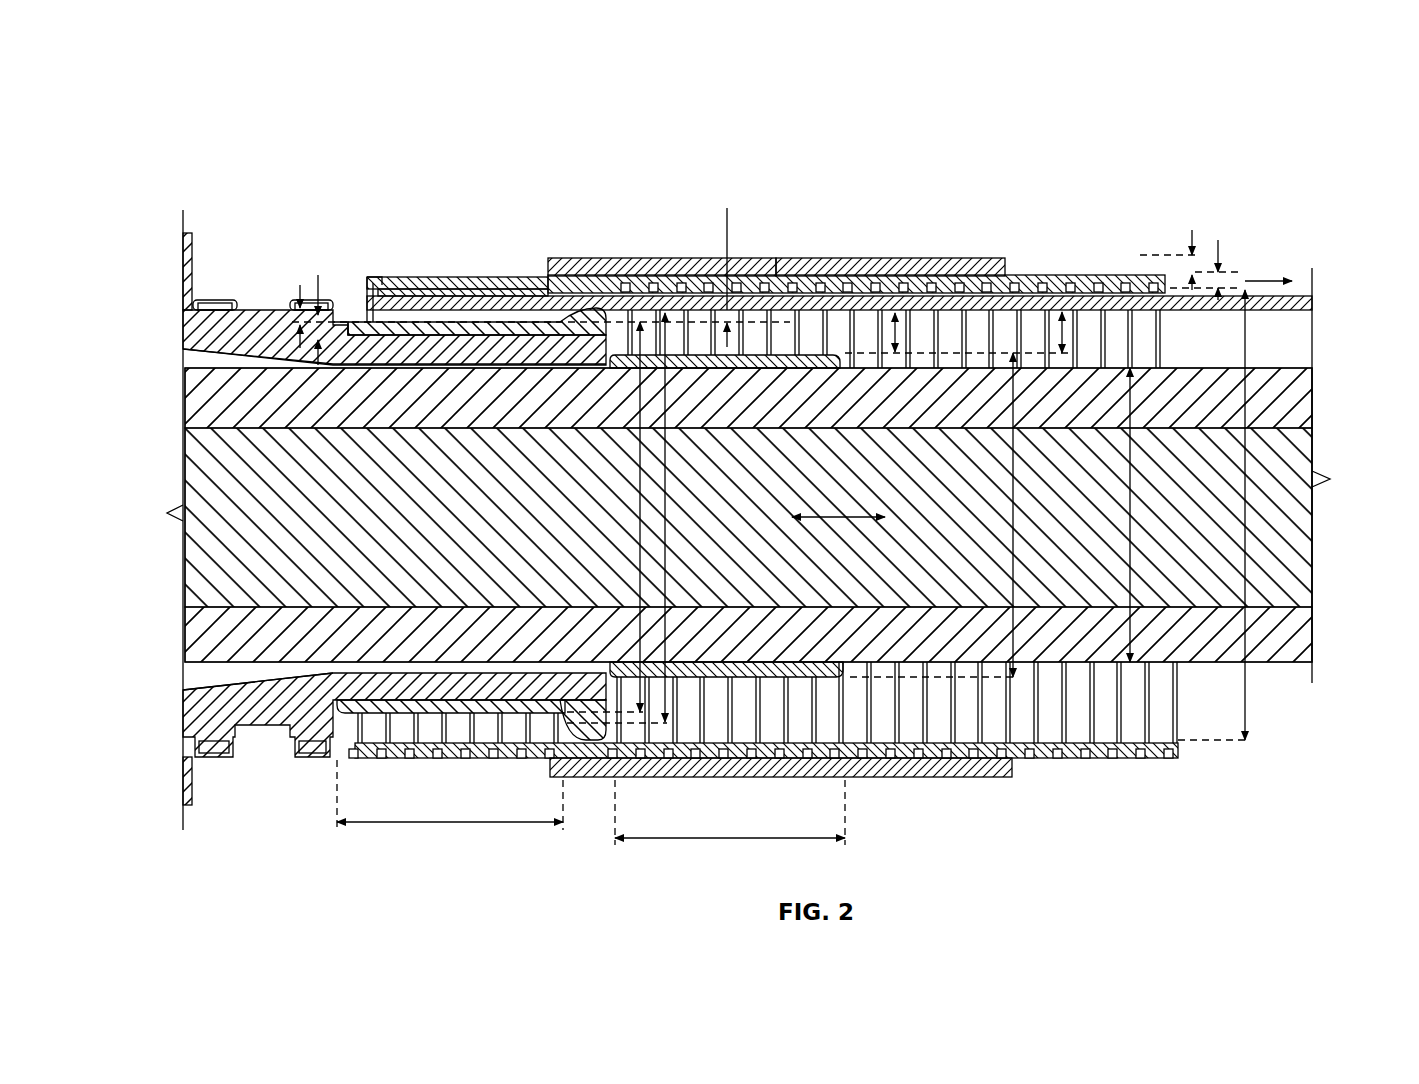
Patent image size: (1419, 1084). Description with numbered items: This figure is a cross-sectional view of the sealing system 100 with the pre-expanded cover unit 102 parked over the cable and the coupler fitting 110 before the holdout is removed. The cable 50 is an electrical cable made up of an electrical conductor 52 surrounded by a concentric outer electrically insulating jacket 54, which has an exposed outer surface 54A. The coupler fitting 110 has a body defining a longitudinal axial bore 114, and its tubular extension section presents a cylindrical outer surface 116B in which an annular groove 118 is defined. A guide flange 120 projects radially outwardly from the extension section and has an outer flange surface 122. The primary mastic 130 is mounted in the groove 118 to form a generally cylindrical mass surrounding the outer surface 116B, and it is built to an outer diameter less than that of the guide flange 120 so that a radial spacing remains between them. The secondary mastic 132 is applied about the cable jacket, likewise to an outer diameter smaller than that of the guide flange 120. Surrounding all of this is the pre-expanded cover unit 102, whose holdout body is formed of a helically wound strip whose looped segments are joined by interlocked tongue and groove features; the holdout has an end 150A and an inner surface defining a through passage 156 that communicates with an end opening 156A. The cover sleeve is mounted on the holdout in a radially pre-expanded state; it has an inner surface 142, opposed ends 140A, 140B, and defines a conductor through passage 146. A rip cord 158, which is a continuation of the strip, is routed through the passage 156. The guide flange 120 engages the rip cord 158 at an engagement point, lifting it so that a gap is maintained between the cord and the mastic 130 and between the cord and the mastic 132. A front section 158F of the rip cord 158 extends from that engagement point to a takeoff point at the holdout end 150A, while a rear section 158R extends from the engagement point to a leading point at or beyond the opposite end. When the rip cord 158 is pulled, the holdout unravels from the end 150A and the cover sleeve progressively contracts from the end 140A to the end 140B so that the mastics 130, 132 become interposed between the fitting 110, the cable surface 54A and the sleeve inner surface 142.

The sealing system 100 is at (1282, 127).
The pre-expanded cover unit 102 is at (1043, 160).
The coupler fitting 110 is at (226, 765).
The axial bore 114 is at (307, 518).
The cylindrical outer surface 116B is at (347, 327).
The annular groove 118 is at (453, 323).
The guide flange 120 is at (628, 355).
The outer flange surface 122 is at (583, 723).
The primary sealant (mastic) 130 is at (400, 322).
The secondary sealant (mastic) 132 is at (832, 330).
The cover sleeve end 140A is at (552, 262).
The cover sleeve end 140B is at (1010, 260).
The inner surface 142 is at (875, 758).
The conductor through passage 146 is at (928, 722).
The holdout end 150A is at (373, 273).
The through passage 156 is at (997, 712).
The end opening 156A is at (283, 392).
The rip cord 158 is at (1297, 317).
The front section 158F is at (600, 300).
The rear section 158R is at (800, 355).
The elongate member (electrical cable) 50 is at (1280, 668).
The electrical conductor 52 is at (1303, 578).
The outer electrically insulating jacket 54 is at (1305, 645).
The exposed outer surface 54A is at (937, 368).